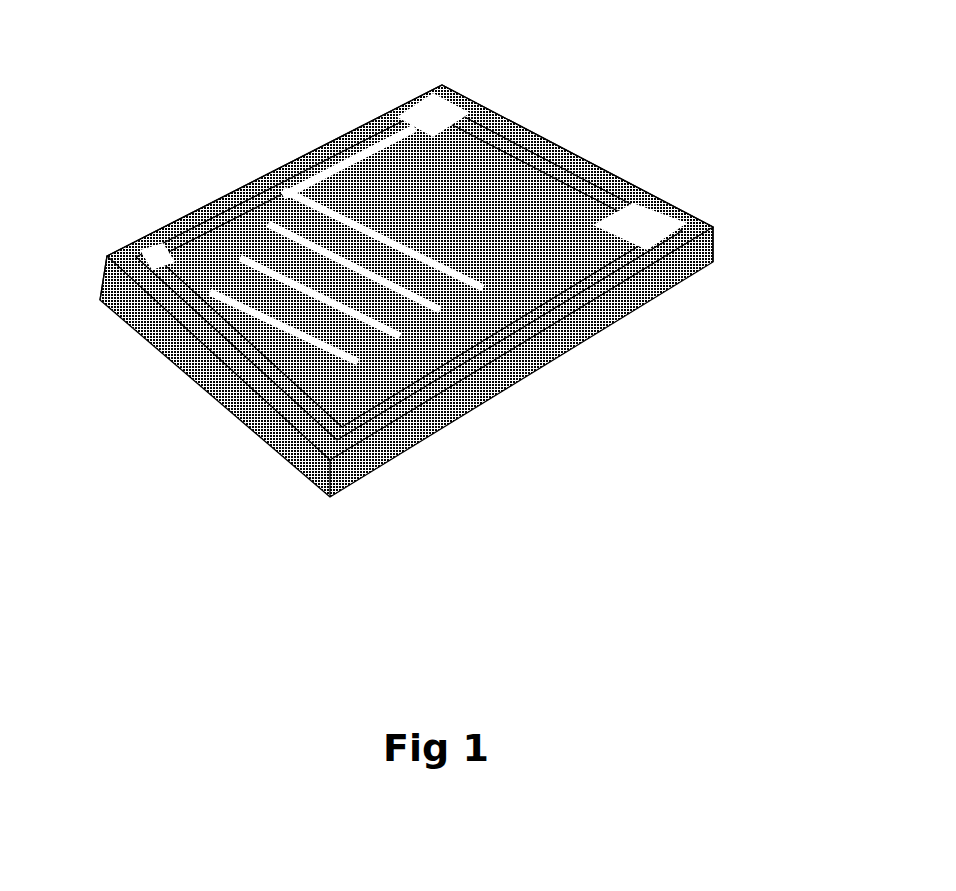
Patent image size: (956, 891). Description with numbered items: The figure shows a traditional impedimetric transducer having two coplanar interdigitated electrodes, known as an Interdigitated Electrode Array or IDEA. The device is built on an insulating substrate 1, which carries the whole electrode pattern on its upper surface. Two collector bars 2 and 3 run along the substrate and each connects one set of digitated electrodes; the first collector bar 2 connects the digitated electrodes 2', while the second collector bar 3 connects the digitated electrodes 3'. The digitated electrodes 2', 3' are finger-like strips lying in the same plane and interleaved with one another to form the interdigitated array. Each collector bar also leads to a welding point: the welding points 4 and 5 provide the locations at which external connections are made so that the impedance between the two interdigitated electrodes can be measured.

The insulating substrate 1 is at (495, 390).
The collector bar 2 is at (409, 290).
The digitated electrodes 2' is at (244, 316).
The collector bar 3 is at (330, 156).
The digitated electrodes 3' is at (299, 171).
The welding point 4 is at (437, 118).
The welding point 5 is at (640, 222).